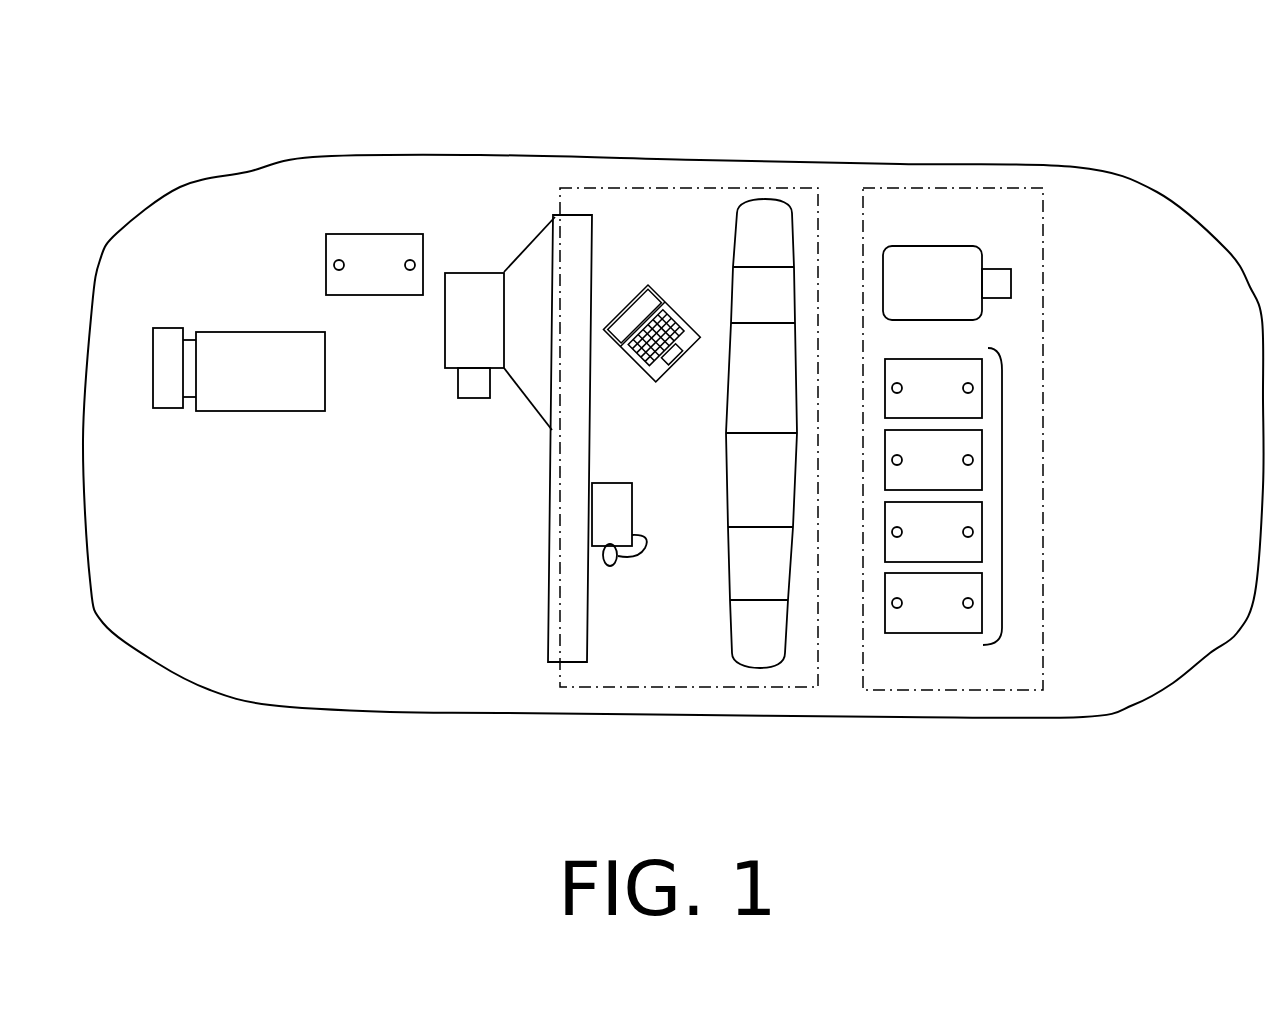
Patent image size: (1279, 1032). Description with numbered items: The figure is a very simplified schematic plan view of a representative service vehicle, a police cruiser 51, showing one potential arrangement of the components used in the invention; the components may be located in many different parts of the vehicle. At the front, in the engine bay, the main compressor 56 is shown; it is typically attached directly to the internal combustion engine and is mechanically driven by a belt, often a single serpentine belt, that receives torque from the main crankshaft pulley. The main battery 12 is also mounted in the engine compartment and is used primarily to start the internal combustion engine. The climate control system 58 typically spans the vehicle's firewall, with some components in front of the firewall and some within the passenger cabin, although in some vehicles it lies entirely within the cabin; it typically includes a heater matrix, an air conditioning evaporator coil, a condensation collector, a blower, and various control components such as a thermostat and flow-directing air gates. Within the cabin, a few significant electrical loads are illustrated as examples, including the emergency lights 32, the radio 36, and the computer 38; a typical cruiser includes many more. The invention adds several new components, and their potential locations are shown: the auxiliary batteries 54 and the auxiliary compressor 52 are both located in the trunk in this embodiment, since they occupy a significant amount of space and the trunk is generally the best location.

The police cruiser 51 is at (1158, 192).
The main battery 12 is at (373, 234).
The main compressor 56 is at (257, 332).
The climate control system 58 is at (573, 215).
The computer 38 is at (648, 285).
The emergency lights 32 is at (765, 199).
The auxiliary compressor 52 is at (935, 245).
The auxiliary batteries 54 is at (1002, 498).
The radio 36 is at (609, 567).